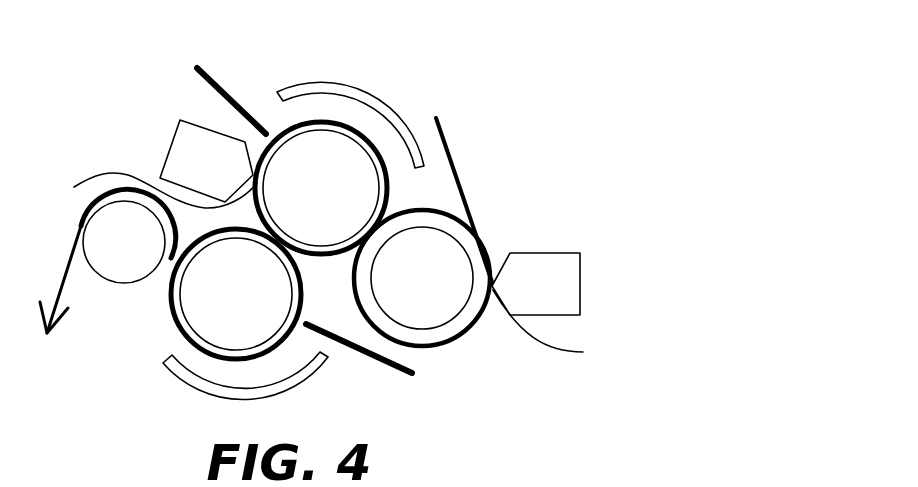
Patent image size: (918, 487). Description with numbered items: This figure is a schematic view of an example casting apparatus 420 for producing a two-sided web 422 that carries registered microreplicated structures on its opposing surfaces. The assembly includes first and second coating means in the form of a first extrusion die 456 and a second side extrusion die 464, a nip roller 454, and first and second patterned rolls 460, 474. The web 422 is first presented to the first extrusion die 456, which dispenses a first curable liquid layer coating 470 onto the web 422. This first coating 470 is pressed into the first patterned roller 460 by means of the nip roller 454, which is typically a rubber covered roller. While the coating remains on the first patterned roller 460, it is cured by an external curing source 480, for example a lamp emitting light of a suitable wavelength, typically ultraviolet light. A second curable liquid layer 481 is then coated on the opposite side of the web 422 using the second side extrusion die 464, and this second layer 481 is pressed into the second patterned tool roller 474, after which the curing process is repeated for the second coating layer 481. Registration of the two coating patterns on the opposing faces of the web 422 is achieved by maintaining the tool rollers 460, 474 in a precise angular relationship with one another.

The casting apparatus 420 is at (470, 62).
The two-sided web 422 is at (448, 153).
The nip roller 454 is at (445, 307).
The first extrusion die 456 is at (540, 252).
The first patterned roller 460 is at (320, 147).
The second side extrusion die 464 is at (166, 145).
The first curable liquid layer coating 470 is at (562, 328).
The second patterned tool roller 474 is at (195, 308).
The external curing source 480 is at (361, 89).
The second curable liquid layer 481 is at (142, 252).